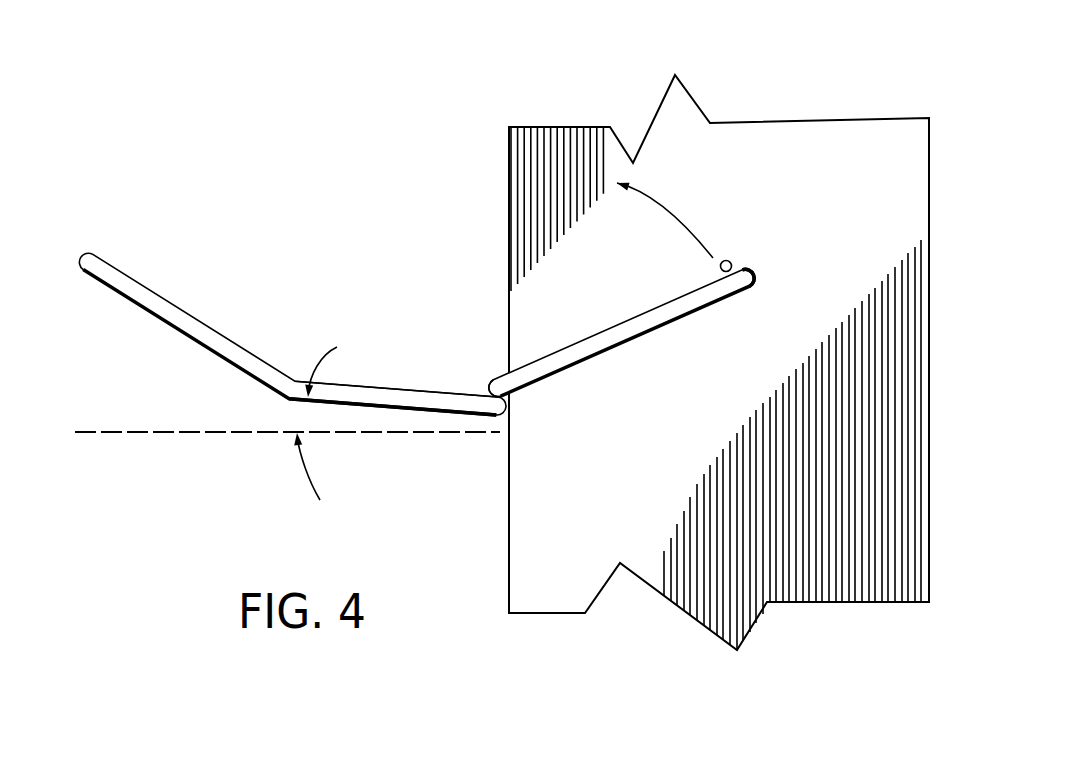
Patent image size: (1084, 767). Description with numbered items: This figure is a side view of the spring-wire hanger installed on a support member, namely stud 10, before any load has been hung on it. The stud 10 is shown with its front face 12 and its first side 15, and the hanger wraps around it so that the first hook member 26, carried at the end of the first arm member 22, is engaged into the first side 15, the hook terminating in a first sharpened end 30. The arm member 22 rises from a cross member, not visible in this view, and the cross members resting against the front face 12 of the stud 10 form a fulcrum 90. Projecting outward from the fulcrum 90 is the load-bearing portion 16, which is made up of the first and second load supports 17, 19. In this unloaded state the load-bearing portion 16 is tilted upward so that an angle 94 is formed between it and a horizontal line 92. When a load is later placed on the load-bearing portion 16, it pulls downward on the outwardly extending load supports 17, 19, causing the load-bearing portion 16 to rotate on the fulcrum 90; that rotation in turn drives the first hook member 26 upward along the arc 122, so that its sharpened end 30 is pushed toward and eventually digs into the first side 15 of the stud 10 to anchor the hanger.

The stud 10 is at (811, 94).
The front face 12 is at (506, 177).
The first side 15 is at (588, 142).
The load-bearing portion 16 is at (338, 288).
The first load support 17 is at (472, 387).
The second load support 19 is at (452, 407).
The first arm member 22 is at (632, 330).
The first hook member 26 is at (742, 262).
The first sharpened end 30 is at (723, 262).
The fulcrum 90 is at (515, 417).
The horizontal line 92 is at (113, 432).
The angle 94 is at (298, 413).
The arc 122 is at (681, 213).